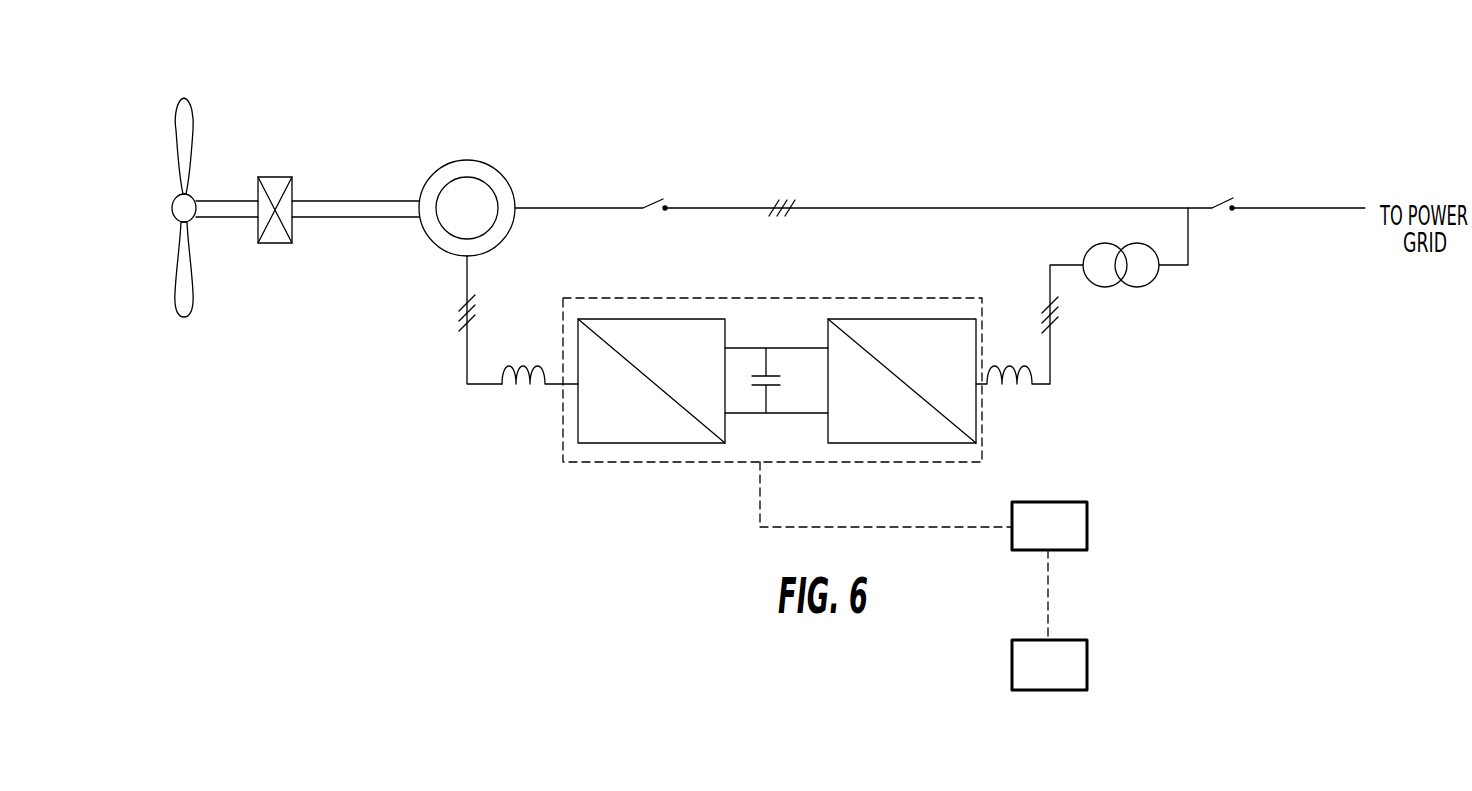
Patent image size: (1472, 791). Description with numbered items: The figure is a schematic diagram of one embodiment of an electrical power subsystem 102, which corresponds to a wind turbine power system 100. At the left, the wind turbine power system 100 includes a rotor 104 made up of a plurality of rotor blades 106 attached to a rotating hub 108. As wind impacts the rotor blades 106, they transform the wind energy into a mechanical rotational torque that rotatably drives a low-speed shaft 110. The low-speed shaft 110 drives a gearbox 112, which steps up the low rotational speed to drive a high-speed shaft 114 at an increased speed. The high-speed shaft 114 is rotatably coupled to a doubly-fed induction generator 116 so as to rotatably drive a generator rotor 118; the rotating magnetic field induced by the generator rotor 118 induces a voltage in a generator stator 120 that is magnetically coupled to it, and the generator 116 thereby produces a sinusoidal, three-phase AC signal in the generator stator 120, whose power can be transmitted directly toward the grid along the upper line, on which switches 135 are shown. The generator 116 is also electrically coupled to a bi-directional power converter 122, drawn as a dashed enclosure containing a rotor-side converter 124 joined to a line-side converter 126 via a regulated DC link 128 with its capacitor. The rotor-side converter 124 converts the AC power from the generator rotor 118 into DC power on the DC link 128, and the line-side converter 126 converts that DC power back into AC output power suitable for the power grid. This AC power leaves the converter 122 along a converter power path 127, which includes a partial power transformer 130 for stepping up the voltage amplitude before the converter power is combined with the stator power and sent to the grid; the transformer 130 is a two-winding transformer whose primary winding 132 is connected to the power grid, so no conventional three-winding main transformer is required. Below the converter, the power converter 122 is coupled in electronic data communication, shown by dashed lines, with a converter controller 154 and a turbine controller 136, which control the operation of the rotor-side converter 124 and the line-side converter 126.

The wind turbine power system 100 is at (203, 62).
The electrical power subsystem 102 is at (1120, 83).
The rotor 104 is at (171, 232).
The rotor blades 106 is at (187, 135).
The rotating hub 108 is at (175, 223).
The low-speed shaft 110 is at (215, 217).
The gearbox 112 is at (272, 177).
The high-speed shaft 114 is at (345, 217).
The doubly-fed induction generator 116 is at (455, 190).
The generator rotor 118 is at (440, 230).
The generator stator 120 is at (430, 170).
The bi-directional power converter 122 is at (830, 369).
The rotor-side converter 124 is at (645, 319).
The line-side converter 126 is at (893, 319).
The converter power path 127 is at (1052, 355).
The regulated DC link 128 is at (770, 335).
The partial power transformer 130 is at (1150, 279).
The primary winding 132 is at (1158, 253).
The switch 135 is at (838, 208).
The converter controller 154 is at (1066, 540).
The turbine controller 136 is at (1066, 679).